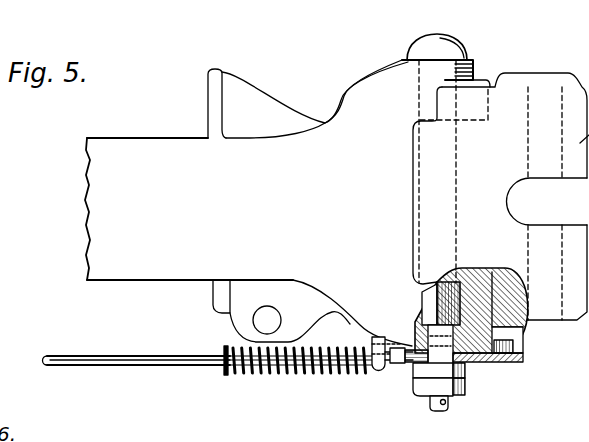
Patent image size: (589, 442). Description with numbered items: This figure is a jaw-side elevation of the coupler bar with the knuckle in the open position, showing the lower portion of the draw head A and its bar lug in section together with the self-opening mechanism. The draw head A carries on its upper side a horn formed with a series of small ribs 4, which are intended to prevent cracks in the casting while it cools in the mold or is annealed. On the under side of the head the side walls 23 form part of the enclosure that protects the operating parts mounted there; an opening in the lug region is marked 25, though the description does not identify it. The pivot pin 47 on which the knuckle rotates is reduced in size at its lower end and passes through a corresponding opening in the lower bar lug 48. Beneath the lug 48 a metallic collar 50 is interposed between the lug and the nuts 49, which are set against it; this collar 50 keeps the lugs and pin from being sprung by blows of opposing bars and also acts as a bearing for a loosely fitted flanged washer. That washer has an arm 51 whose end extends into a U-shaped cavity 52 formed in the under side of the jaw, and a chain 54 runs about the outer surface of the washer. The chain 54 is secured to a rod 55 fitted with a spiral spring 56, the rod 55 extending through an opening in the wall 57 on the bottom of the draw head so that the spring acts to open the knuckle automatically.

The small ribs 4 is at (205, 134).
The draw head A is at (463, 177).
The side walls 23 is at (233, 321).
The hole 25 is at (268, 321).
The pivot pin 47 is at (428, 302).
The lower bar lug 48 is at (517, 334).
The nuts 49 is at (440, 381).
The metallic collar 50 is at (426, 364).
The arm 51 is at (483, 359).
The U-shaped cavity 52 is at (520, 350).
The chain 54 is at (400, 366).
The rod 55 is at (141, 363).
The spiral spring 56 is at (309, 369).
The wall 57 is at (375, 369).